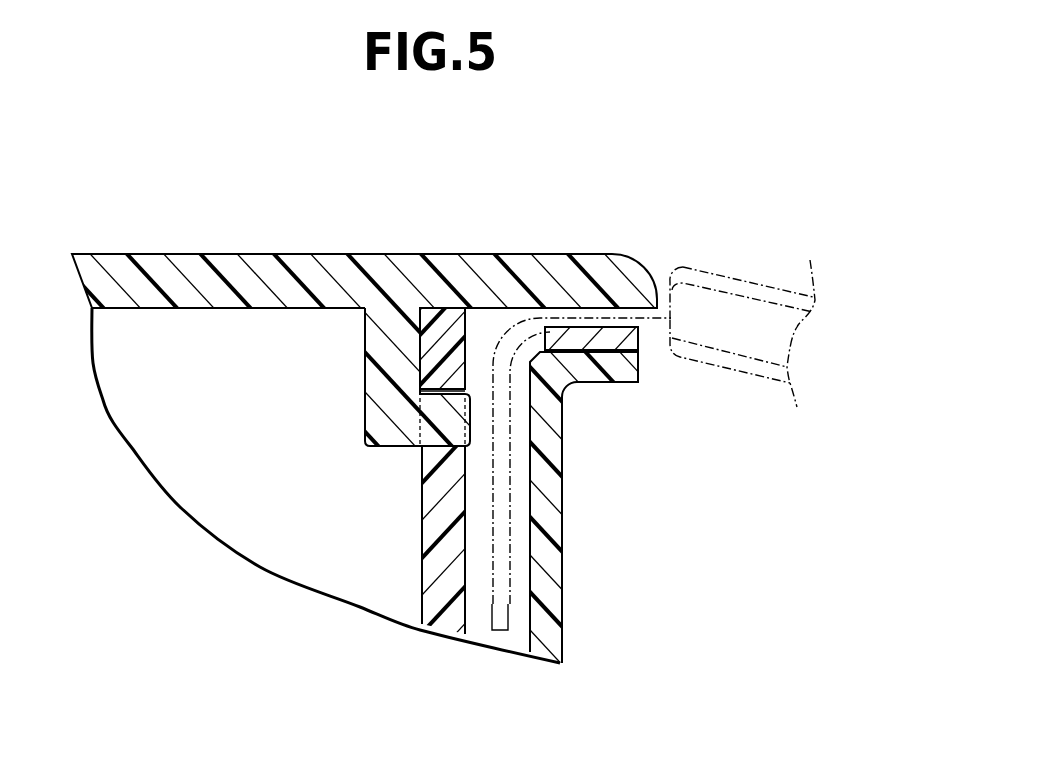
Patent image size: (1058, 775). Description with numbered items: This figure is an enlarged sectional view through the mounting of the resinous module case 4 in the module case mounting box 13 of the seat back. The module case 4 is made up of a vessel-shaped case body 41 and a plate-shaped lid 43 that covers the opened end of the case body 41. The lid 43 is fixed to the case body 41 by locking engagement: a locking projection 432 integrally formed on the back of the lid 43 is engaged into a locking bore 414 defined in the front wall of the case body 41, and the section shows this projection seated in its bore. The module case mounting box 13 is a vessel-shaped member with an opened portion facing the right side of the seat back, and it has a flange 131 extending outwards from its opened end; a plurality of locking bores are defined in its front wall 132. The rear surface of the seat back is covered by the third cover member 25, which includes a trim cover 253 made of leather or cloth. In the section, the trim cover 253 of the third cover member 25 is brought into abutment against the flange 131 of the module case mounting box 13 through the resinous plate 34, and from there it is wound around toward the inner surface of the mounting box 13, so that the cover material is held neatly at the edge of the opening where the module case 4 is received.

The module case 4 is at (211, 432).
The lid 43 is at (213, 320).
The locking projection 432 is at (438, 397).
The locking bore 414 is at (417, 405).
The case body 41 is at (414, 531).
The module case mounting box 13 is at (628, 509).
The flange 131 is at (627, 378).
The front wall 132 is at (553, 603).
The resinous plate 34 is at (638, 340).
The trim cover 253 is at (681, 266).
The third cover member 25 is at (764, 270).